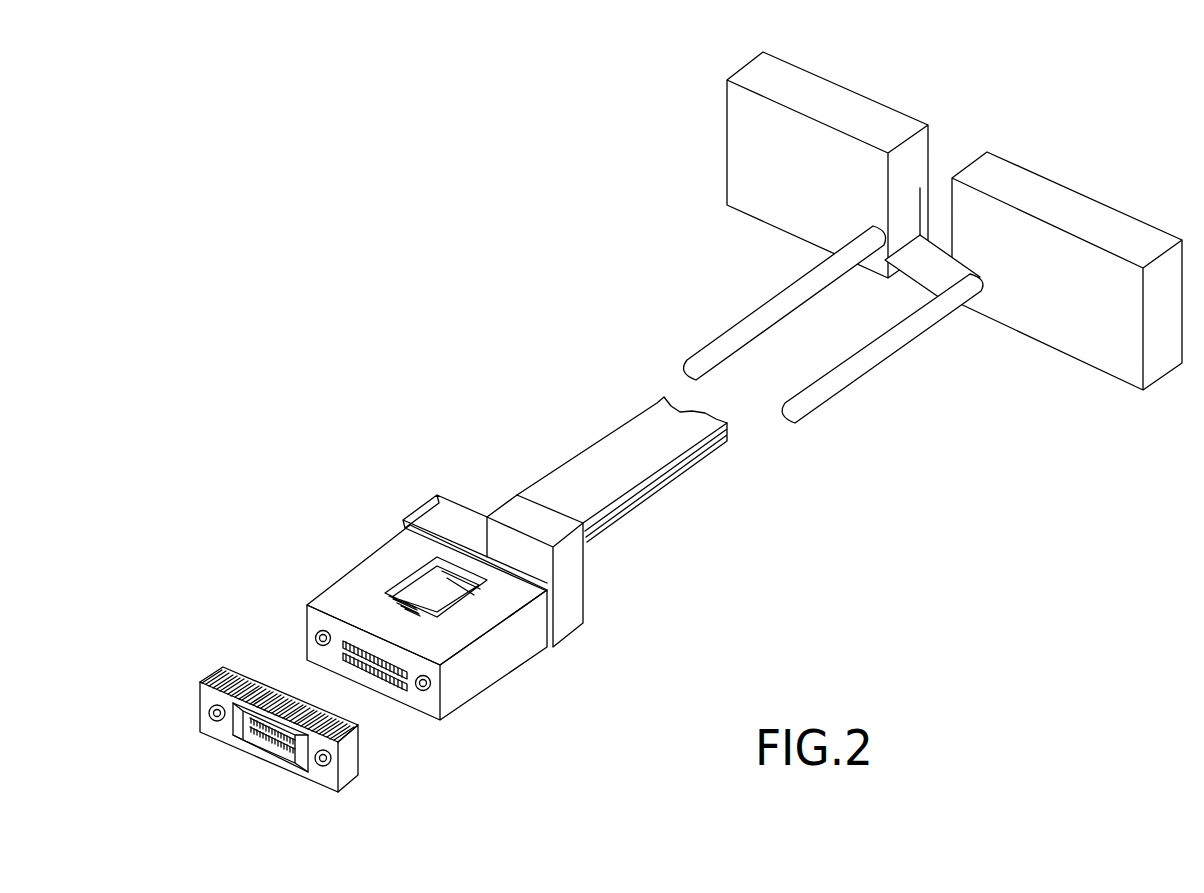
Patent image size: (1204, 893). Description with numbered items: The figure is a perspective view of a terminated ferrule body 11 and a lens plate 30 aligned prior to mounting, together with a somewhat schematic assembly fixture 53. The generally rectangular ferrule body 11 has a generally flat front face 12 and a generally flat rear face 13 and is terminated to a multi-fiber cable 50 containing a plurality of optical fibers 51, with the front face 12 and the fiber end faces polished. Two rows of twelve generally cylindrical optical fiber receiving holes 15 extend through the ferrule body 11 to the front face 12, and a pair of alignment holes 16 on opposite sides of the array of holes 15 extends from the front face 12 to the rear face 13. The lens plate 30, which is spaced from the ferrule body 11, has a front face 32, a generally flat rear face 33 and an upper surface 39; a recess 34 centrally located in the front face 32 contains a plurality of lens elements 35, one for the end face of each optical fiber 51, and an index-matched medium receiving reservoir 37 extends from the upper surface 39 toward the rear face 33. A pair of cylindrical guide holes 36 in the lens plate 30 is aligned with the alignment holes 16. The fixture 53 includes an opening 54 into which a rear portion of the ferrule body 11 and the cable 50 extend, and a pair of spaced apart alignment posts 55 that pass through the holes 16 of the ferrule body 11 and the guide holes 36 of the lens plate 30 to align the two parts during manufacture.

The ferrule body 11 is at (425, 632).
The front face 12 is at (306, 603).
The rear face 13 is at (586, 606).
The optical fiber receiving holes 15 is at (348, 637).
The alignment holes 16 is at (316, 634).
The lens plate 30 is at (267, 715).
The front face 32 is at (208, 746).
The rear face 33 is at (226, 675).
The recess 34 is at (268, 766).
The lens elements 35 is at (292, 765).
The guide holes 36 is at (207, 697).
The index-matched medium receiving reservoir 37 is at (268, 697).
The upper surface 39 is at (205, 681).
The multi-fiber cable 50 is at (585, 460).
The optical fibers 51 is at (393, 590).
The assembly fixture 53 is at (1006, 348).
The opening 54 is at (917, 219).
The alignment posts 55 is at (810, 278).